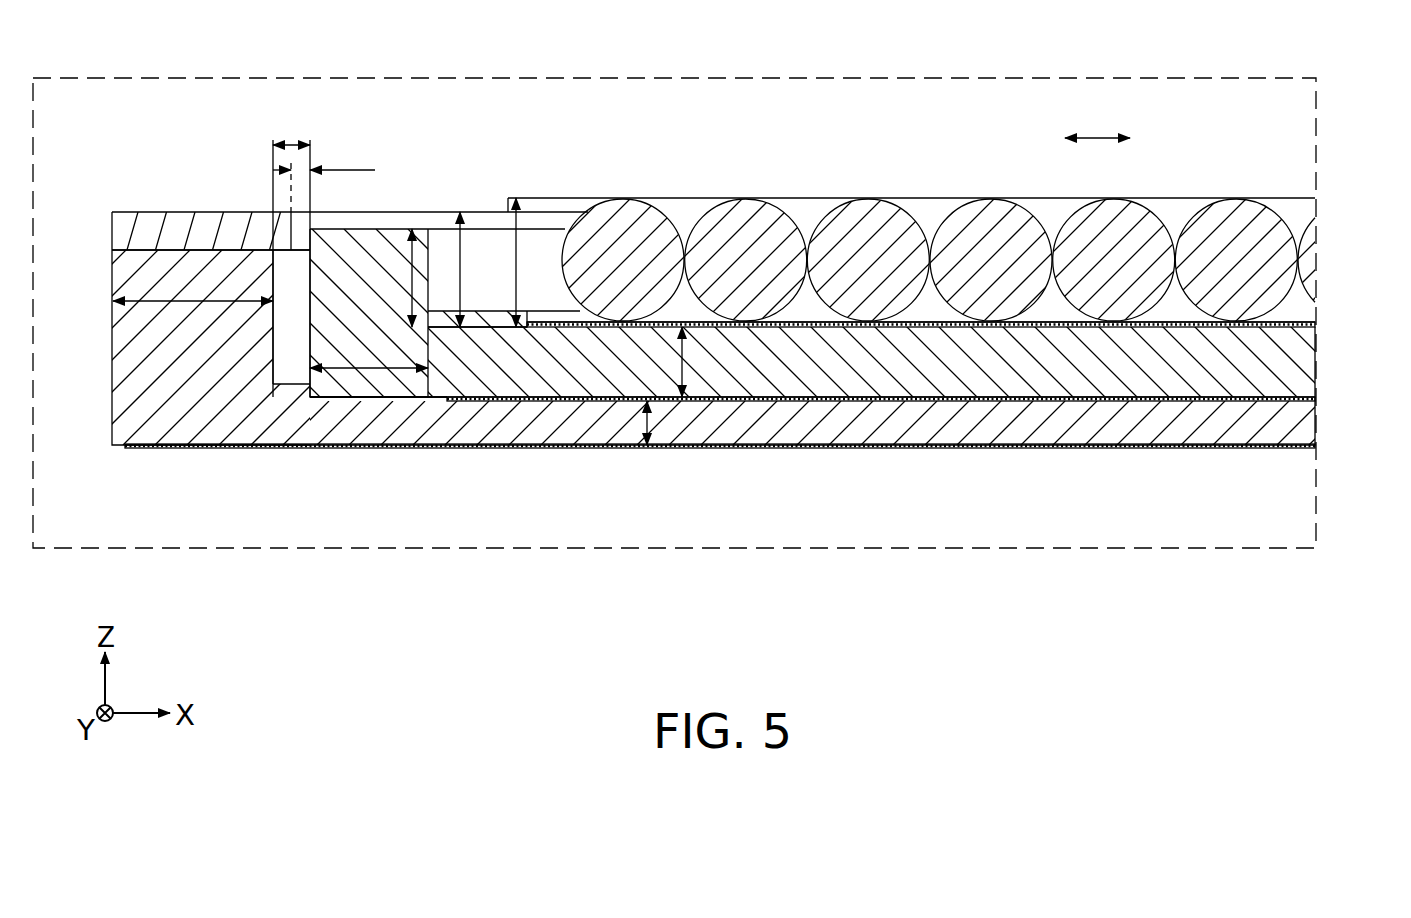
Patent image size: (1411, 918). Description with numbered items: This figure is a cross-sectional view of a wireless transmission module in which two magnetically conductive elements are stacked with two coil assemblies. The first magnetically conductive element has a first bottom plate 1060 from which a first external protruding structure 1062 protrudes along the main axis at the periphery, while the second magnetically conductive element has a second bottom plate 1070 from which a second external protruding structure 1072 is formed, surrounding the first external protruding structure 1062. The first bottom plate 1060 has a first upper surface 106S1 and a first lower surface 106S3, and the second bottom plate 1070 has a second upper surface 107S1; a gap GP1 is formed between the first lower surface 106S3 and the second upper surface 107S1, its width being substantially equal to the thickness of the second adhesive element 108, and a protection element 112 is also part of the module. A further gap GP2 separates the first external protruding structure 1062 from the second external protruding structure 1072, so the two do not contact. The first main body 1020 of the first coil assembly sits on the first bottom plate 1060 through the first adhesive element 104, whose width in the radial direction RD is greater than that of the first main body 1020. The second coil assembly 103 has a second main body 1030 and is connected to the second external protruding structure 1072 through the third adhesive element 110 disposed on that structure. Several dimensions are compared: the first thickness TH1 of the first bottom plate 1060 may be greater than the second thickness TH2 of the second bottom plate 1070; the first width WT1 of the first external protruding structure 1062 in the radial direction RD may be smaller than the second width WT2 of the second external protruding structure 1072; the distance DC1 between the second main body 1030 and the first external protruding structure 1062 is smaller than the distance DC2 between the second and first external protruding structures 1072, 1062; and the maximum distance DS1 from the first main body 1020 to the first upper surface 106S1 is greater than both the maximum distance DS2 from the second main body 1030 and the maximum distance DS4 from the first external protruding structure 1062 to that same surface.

The second main body 1030 is at (336, 200).
The second coil assembly 103 is at (143, 224).
The third adhesive element 110 is at (137, 249).
The second external protruding structure 1072 is at (140, 330).
The first external protruding structure 1062 is at (378, 243).
The first bottom plate 1060 is at (1285, 355).
The second bottom plate 1070 is at (1285, 417).
The first upper surface 106S1 is at (487, 326).
The first lower surface 106S3 is at (435, 395).
The second upper surface 107S1 is at (400, 400).
The gap GP1 is at (353, 398).
The gap GP2 is at (290, 362).
The protection element 112 is at (728, 448).
The second adhesive element 108 is at (850, 401).
The first adhesive element 104 is at (984, 324).
The first main body 1020 is at (928, 210).
The distance DC1 is at (380, 168).
The distance DC2 is at (293, 126).
The first width WT1 is at (369, 351).
The second width WT2 is at (193, 283).
The maximum distance DS1 is at (508, 228).
The maximum distance DS2 is at (458, 238).
The maximum distance DS4 is at (384, 278).
The first thickness TH1 is at (654, 362).
The second thickness TH2 is at (618, 423).
The radial direction RD is at (1118, 132).